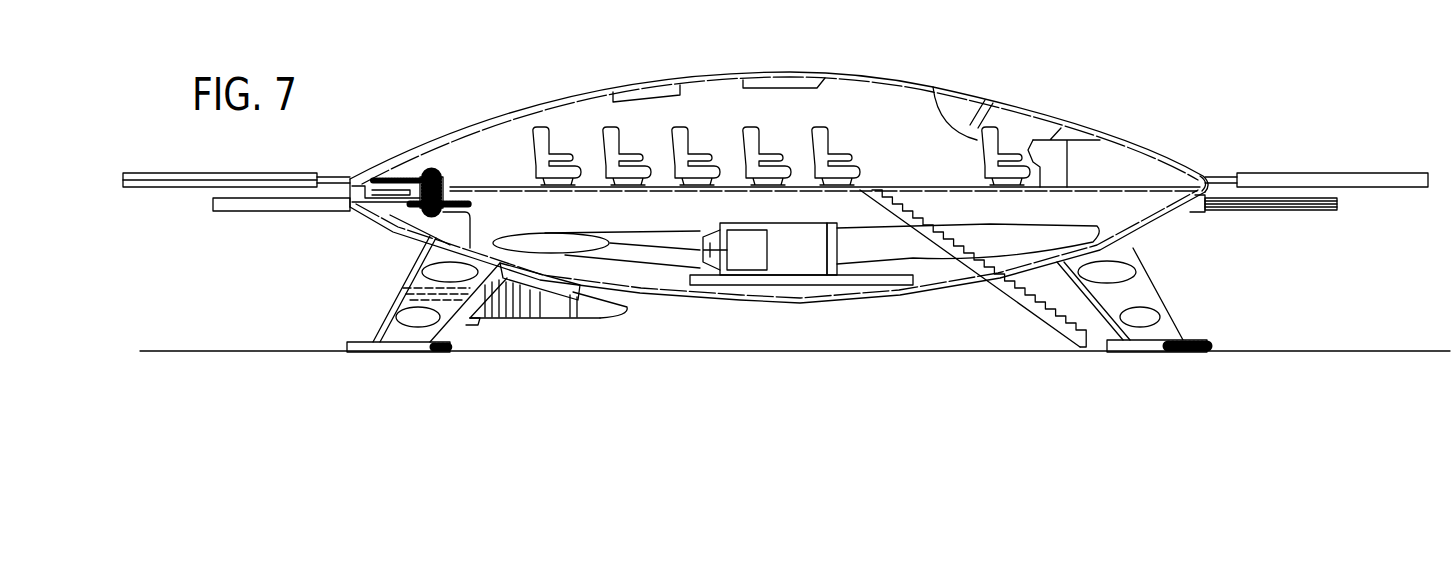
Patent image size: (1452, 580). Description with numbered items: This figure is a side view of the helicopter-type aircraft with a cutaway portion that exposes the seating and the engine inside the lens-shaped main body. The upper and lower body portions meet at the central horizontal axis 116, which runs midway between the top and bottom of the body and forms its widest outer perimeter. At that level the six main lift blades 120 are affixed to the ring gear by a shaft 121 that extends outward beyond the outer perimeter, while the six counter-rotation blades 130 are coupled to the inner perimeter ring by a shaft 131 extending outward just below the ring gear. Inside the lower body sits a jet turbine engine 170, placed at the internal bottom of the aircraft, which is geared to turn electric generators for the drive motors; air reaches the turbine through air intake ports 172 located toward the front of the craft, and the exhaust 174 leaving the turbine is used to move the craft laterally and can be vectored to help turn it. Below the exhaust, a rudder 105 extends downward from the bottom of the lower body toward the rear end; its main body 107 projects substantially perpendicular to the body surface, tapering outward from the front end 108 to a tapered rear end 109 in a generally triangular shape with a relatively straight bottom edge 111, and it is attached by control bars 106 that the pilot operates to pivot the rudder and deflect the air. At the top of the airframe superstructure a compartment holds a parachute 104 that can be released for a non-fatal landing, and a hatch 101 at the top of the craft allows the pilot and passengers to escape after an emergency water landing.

The hatch 101 is at (660, 88).
The parachute 104 is at (790, 83).
The central horizontal axis 116 is at (1213, 178).
The shaft 121 is at (1223, 177).
The lift blades 120 is at (1393, 173).
The counter-rotation blades 130 is at (1283, 213).
The shaft 131 is at (1200, 203).
The air intake ports 172 is at (1080, 220).
The jet turbine engines 170 is at (723, 220).
The exhaust 174 is at (587, 250).
The main body 107 is at (533, 280).
The control bars 106 is at (588, 297).
The front end 108 is at (607, 315).
The rudder 105 is at (557, 307).
The bottom edge 111 is at (513, 297).
The rear end 109 is at (473, 320).